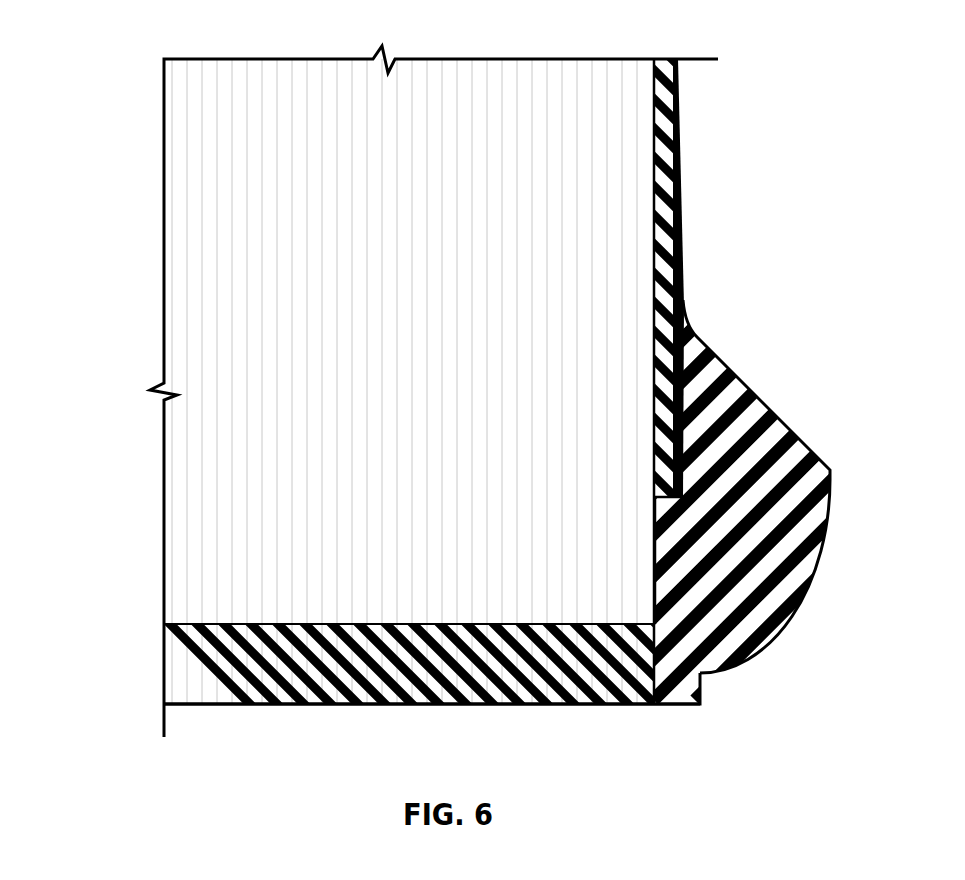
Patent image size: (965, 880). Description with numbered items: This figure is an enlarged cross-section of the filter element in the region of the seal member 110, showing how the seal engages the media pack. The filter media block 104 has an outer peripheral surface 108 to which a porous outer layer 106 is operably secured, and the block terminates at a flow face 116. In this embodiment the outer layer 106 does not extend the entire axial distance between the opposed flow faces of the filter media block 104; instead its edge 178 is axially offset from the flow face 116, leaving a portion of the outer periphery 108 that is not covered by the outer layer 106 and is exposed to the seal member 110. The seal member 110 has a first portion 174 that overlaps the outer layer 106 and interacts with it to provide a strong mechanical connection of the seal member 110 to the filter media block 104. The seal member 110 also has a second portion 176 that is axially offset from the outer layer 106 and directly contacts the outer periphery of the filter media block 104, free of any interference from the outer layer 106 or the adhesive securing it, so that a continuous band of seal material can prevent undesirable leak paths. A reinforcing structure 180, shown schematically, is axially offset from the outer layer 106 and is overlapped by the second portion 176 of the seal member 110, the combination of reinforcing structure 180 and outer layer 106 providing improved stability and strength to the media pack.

The filter media block 104 is at (605, 246).
The porous outer layer 106 is at (664, 127).
The outer peripheral surface 108 is at (657, 577).
The seal member 110 is at (808, 479).
The flow face 116 is at (432, 704).
The first portion 174 is at (662, 413).
The second portion 176 is at (653, 559).
The edge 178 is at (660, 497).
The reinforcing structure 180 is at (300, 672).